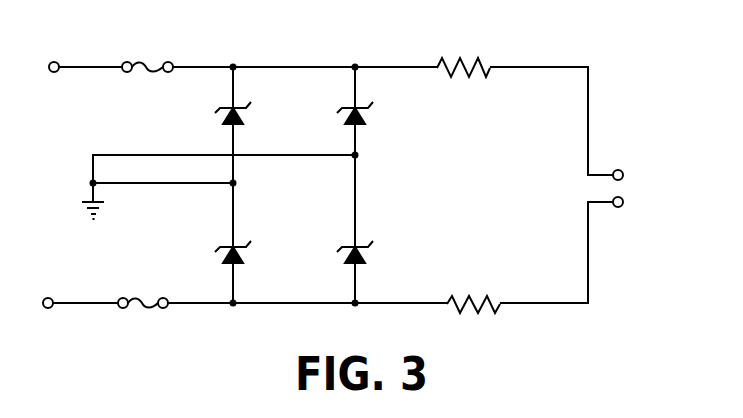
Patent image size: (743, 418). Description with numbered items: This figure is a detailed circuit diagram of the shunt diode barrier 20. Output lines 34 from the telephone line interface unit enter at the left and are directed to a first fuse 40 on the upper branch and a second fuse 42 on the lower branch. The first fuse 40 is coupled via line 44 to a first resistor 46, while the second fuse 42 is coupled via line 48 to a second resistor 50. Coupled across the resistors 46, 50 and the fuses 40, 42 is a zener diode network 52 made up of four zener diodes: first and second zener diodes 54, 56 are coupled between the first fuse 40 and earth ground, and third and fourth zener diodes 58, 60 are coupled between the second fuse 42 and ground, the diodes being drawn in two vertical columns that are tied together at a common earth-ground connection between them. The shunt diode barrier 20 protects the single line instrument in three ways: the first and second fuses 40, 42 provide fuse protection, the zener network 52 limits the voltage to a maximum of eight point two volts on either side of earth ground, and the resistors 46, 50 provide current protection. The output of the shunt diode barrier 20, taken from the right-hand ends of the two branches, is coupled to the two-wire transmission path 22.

The shunt diode barrier 20 is at (223, 348).
The two-wire transmission path 22 is at (655, 190).
The output lines 34 is at (83, 66).
The first fuse 40 is at (148, 66).
The second fuse 42 is at (145, 300).
The line 44 is at (285, 66).
The first resistor 46 is at (465, 65).
The line 48 is at (278, 304).
The second resistor 50 is at (482, 296).
The zener diode network 52 is at (302, 203).
The first zener diode 54 is at (240, 116).
The second zener diode 56 is at (362, 117).
The third zener diode 58 is at (240, 257).
The fourth zener diode 60 is at (362, 257).